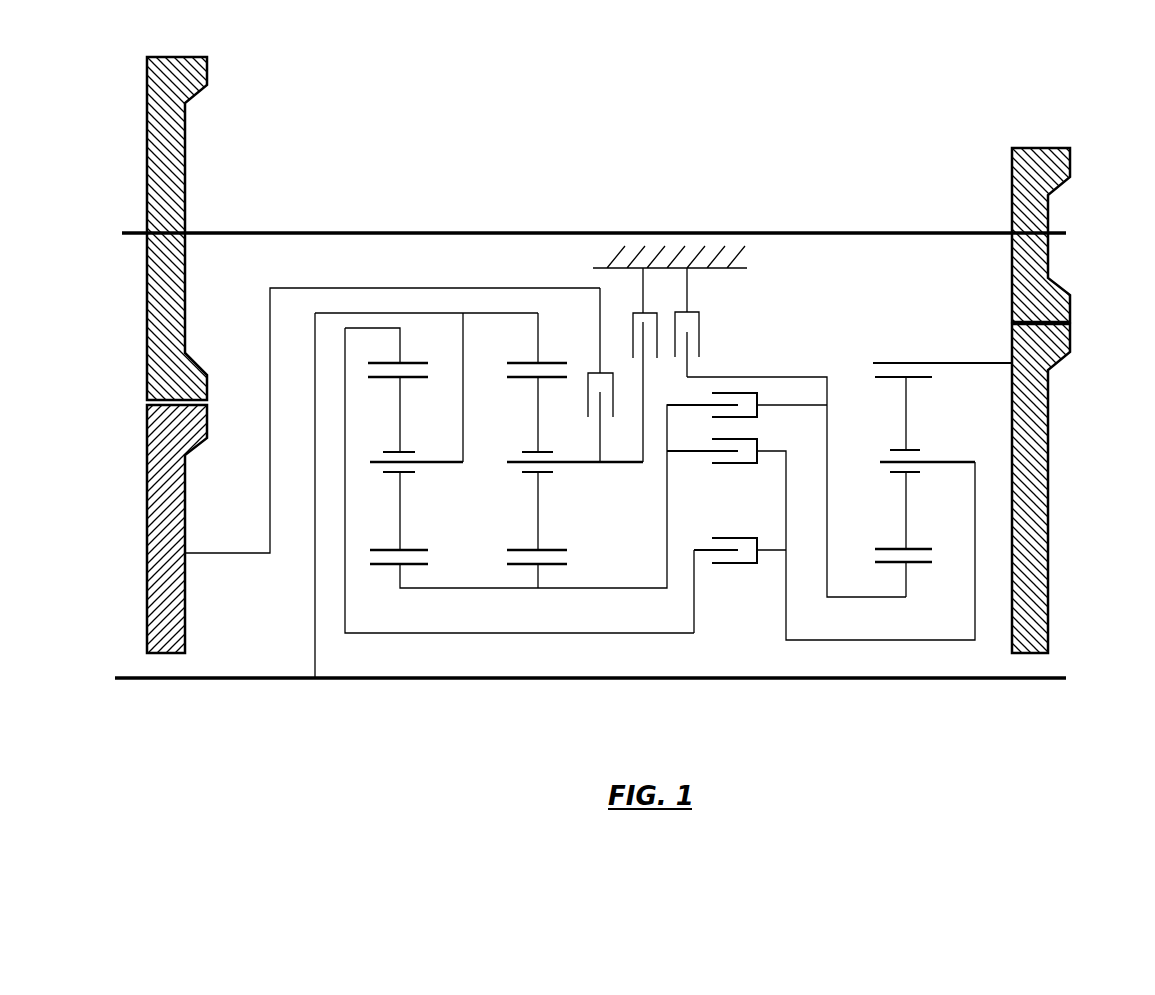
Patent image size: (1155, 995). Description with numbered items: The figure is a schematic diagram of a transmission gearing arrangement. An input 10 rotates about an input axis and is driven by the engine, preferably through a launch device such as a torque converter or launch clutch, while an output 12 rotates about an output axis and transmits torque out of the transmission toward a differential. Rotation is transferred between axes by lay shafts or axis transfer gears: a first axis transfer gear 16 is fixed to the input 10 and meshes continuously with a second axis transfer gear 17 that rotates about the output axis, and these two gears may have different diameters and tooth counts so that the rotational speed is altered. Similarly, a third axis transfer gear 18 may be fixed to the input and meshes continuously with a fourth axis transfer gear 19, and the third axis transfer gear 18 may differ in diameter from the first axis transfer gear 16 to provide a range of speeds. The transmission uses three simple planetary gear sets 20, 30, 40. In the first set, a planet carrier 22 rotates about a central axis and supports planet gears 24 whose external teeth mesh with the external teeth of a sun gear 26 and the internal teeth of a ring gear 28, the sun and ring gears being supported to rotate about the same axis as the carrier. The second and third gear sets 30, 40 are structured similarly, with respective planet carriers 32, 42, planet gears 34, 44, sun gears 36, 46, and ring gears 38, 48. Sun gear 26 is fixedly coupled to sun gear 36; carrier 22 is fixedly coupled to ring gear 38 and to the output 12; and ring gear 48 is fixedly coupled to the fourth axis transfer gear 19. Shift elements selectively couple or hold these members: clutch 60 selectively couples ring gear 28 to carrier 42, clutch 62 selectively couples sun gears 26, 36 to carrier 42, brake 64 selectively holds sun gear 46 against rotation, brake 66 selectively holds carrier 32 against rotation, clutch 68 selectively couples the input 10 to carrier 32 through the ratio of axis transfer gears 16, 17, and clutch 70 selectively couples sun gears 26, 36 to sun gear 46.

The input 10 is at (418, 233).
The output 12 is at (690, 678).
The first axis transfer gear 16 is at (185, 158).
The second axis transfer gear 17 is at (185, 632).
The third axis transfer gear 18 is at (1048, 262).
The fourth axis transfer gear 19 is at (1048, 467).
The first planetary gear set 20 is at (397, 558).
The planet carrier 22 is at (430, 462).
The planet gears 24 is at (400, 420).
The sun gear 26 is at (400, 588).
The ring gear 28 is at (400, 338).
The second planetary gear set 30 is at (542, 526).
The planet carrier 32 is at (565, 462).
The planet gears 34 is at (538, 422).
The sun gear 36 is at (538, 588).
The ring gear 38 is at (538, 340).
The third planetary gear set 40 is at (907, 558).
The planet carrier 42 is at (950, 462).
The planet gears 44 is at (906, 415).
The sun gear 46 is at (906, 597).
The ring gear 48 is at (947, 363).
The clutch 60 is at (727, 566).
The clutch 62 is at (716, 468).
The brake 64 is at (705, 322).
The brake 66 is at (636, 365).
The clutch 68 is at (608, 375).
The clutch 70 is at (728, 413).